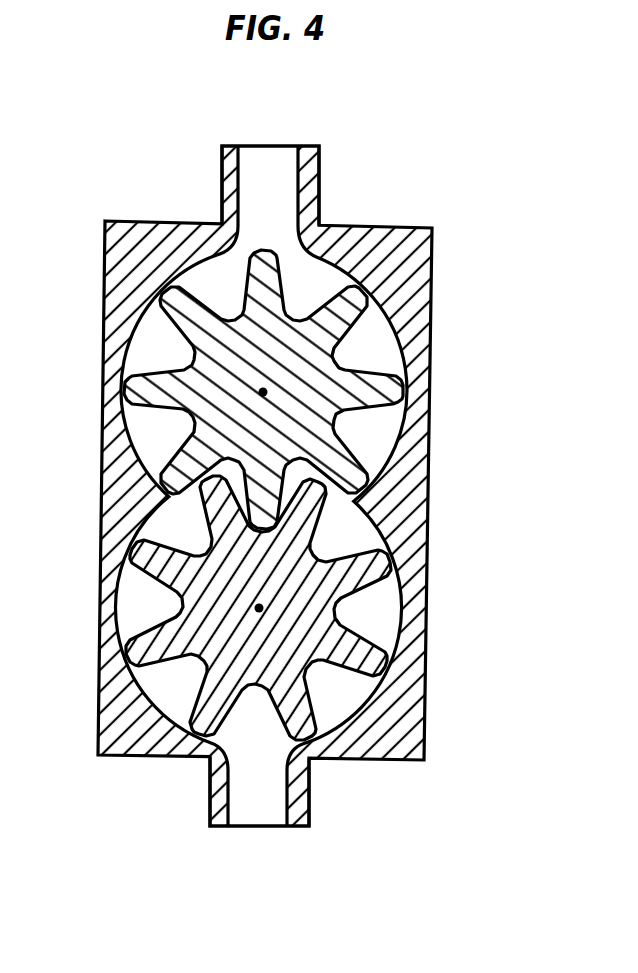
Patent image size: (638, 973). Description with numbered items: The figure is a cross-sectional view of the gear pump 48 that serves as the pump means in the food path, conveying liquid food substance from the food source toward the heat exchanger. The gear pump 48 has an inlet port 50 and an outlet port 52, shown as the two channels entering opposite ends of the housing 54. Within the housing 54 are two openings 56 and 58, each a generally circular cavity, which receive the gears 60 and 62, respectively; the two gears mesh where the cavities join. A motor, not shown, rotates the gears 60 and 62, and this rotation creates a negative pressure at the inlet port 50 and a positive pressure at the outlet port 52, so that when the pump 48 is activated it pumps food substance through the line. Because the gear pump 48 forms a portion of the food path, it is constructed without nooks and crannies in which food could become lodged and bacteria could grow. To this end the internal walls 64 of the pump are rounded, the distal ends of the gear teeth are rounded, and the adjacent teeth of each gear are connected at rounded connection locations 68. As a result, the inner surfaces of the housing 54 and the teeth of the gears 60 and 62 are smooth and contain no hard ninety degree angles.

The gear pump 48 is at (470, 251).
The inlet port 50 is at (308, 798).
The outlet port 52 is at (320, 189).
The housing 54 is at (427, 443).
The opening 56 is at (373, 347).
The opening 58 is at (377, 611).
The gear 60 is at (142, 379).
The gear 62 is at (147, 569).
The internal walls 64 is at (365, 525).
The rounded connection locations 68 is at (135, 718).